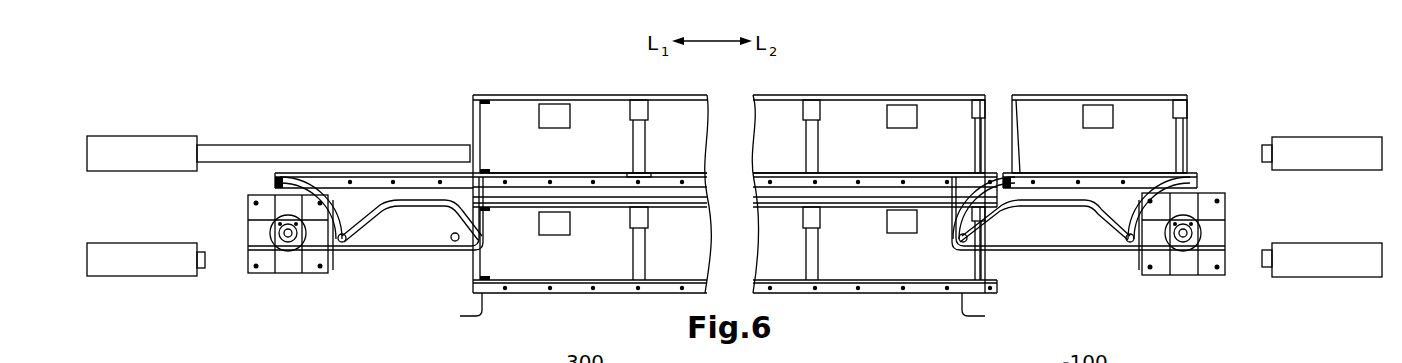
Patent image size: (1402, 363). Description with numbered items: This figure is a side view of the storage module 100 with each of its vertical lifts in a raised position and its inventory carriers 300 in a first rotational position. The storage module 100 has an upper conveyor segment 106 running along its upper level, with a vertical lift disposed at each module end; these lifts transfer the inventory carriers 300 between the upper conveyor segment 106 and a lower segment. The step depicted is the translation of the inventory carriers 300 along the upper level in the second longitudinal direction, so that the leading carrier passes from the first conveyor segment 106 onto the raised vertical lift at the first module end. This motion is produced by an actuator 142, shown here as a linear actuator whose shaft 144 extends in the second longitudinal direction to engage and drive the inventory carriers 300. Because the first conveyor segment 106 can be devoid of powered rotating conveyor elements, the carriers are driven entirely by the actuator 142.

The storage module 100 is at (904, 80).
The first conveyor segment 106 is at (779, 178).
The actuator 142 is at (120, 162).
The shaft 144 is at (241, 155).
The inventory carriers 300 is at (672, 137).